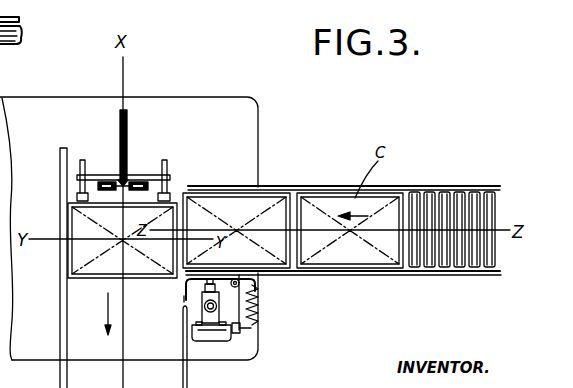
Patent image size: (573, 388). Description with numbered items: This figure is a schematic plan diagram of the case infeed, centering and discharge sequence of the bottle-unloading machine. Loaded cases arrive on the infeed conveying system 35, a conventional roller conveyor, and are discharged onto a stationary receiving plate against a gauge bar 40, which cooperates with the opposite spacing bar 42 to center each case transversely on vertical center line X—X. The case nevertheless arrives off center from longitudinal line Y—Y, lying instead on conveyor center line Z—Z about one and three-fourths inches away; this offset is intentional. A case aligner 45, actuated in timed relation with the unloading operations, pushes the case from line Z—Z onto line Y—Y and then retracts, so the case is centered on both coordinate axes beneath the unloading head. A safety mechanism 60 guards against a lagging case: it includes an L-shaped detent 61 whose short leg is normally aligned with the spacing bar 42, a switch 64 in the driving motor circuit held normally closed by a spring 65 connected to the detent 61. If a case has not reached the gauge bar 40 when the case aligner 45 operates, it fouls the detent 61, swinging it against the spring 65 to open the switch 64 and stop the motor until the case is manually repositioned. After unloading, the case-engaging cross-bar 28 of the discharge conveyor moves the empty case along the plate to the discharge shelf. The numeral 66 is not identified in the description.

The case-engaging cross-bar 28 is at (146, 182).
The infeed conveying system 35 is at (489, 215).
The gauge bar 40 is at (62, 309).
The spacing bar 42 is at (188, 377).
The case aligner 45 is at (176, 189).
The safety mechanism 60 is at (240, 306).
The L-shaped detent 61 is at (220, 273).
The switch 64 is at (250, 330).
The spring 65 is at (262, 288).
The bracket arm 66 is at (181, 283).